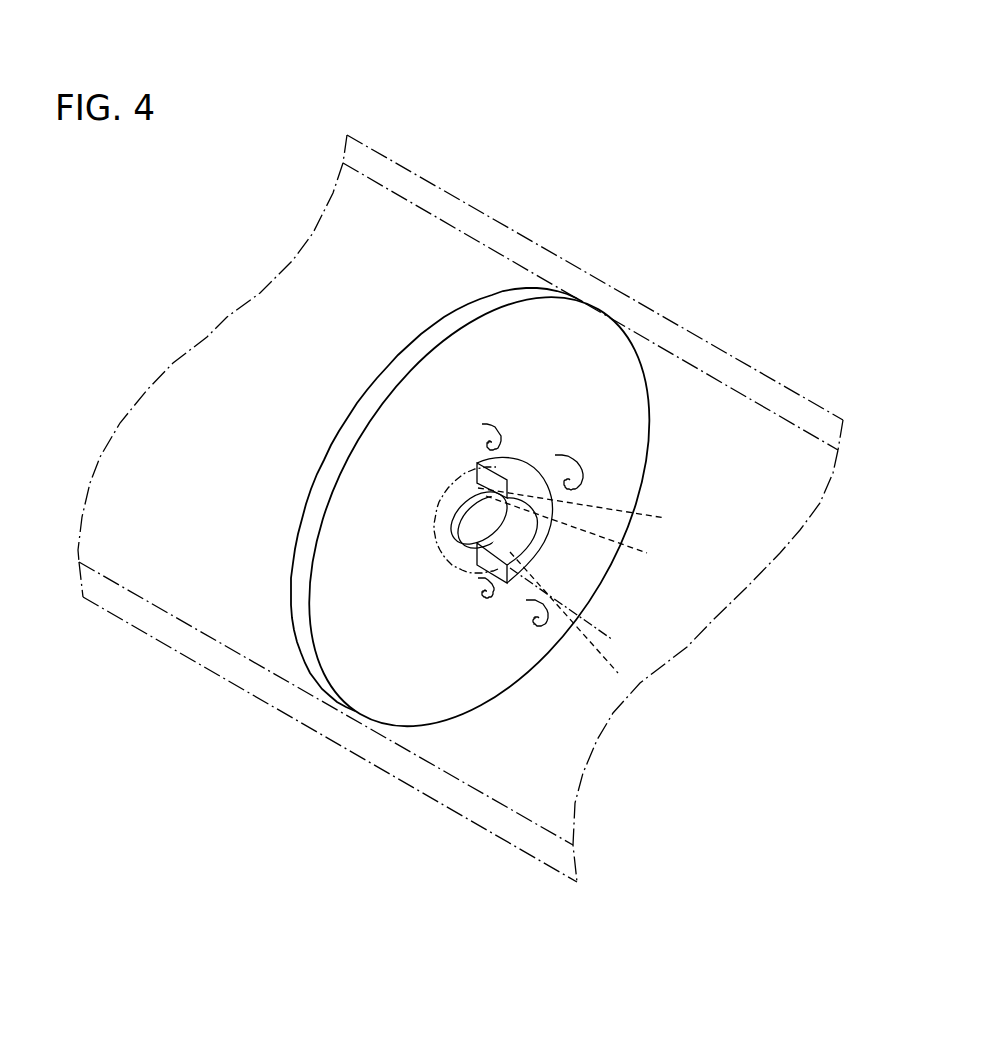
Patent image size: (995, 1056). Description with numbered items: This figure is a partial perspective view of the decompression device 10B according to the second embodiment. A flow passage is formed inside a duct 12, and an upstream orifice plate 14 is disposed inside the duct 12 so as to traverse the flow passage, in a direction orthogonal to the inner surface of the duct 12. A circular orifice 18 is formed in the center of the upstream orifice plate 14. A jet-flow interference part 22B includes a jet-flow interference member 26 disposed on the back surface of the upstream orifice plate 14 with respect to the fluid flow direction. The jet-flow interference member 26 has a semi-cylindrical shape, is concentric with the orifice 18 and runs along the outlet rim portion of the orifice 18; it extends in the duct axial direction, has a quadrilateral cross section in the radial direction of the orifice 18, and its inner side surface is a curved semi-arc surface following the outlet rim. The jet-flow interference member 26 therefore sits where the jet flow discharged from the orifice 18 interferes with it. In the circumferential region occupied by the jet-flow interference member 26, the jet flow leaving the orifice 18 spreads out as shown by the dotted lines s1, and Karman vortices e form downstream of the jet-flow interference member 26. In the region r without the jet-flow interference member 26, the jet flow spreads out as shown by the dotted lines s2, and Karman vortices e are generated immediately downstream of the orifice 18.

The decompression device 10B is at (628, 278).
The duct 12 is at (532, 237).
The upstream orifice plate 14 is at (437, 320).
The orifice 18 is at (455, 522).
The jet-flow interference member 26 is at (531, 465).
The jet-flow interference part 22B is at (497, 540).
The region r is at (440, 539).
The dotted lines s1 is at (627, 545).
The dotted lines s2 is at (643, 513).
The Karman vortices e is at (578, 470).